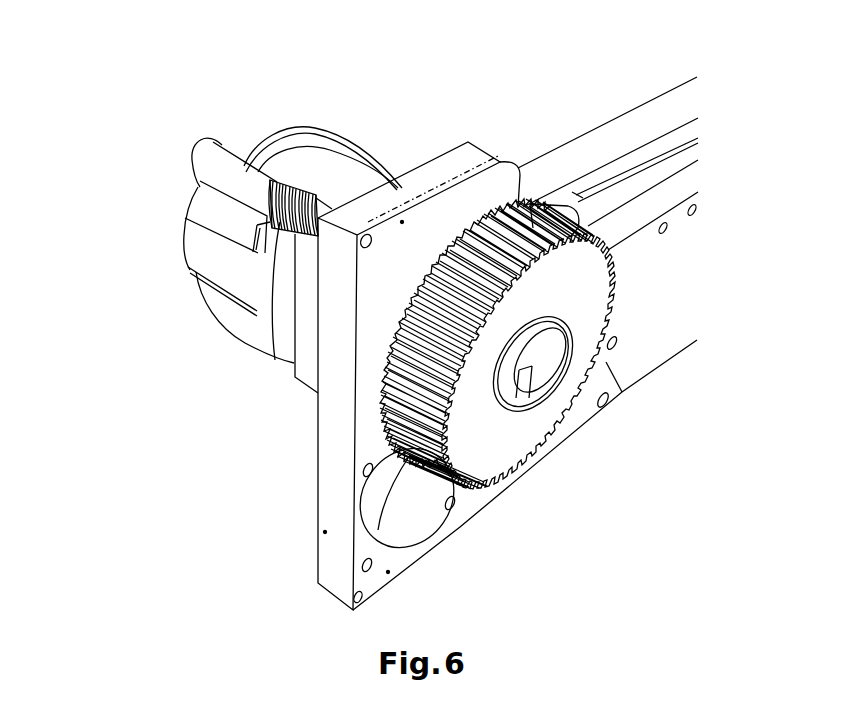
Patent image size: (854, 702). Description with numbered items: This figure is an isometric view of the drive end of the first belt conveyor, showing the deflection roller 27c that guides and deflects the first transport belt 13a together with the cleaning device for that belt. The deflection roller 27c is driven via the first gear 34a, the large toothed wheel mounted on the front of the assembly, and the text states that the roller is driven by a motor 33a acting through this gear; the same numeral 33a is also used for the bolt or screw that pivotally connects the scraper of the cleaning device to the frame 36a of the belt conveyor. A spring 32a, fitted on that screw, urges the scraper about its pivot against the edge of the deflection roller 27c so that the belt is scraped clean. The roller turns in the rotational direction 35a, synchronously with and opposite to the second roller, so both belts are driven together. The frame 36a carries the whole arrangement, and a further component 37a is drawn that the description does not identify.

The first transport belt 13a is at (341, 143).
The first deflection roller 27c is at (368, 177).
The spring 32a is at (298, 217).
The motor 33a is at (195, 162).
The first gear 34a is at (582, 308).
The rotational direction 35a is at (332, 417).
The frame 36a is at (630, 127).
The motor housing 37a is at (218, 208).